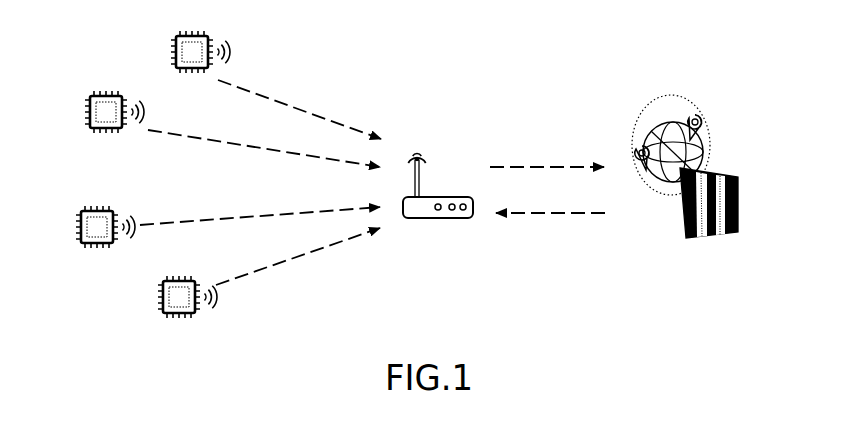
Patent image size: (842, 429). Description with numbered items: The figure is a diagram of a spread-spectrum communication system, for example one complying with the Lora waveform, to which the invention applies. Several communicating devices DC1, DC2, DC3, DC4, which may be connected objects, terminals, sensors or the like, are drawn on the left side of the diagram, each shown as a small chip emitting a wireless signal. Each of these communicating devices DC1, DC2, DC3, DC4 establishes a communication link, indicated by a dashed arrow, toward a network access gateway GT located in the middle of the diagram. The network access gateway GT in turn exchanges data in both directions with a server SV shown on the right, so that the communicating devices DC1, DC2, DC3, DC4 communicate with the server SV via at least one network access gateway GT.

The communicating device DC1 is at (213, 34).
The communicating device DC2 is at (116, 95).
The communicating device DC3 is at (100, 210).
The communicating device DC4 is at (162, 302).
The network access gateway GT is at (437, 153).
The server SV is at (723, 170).